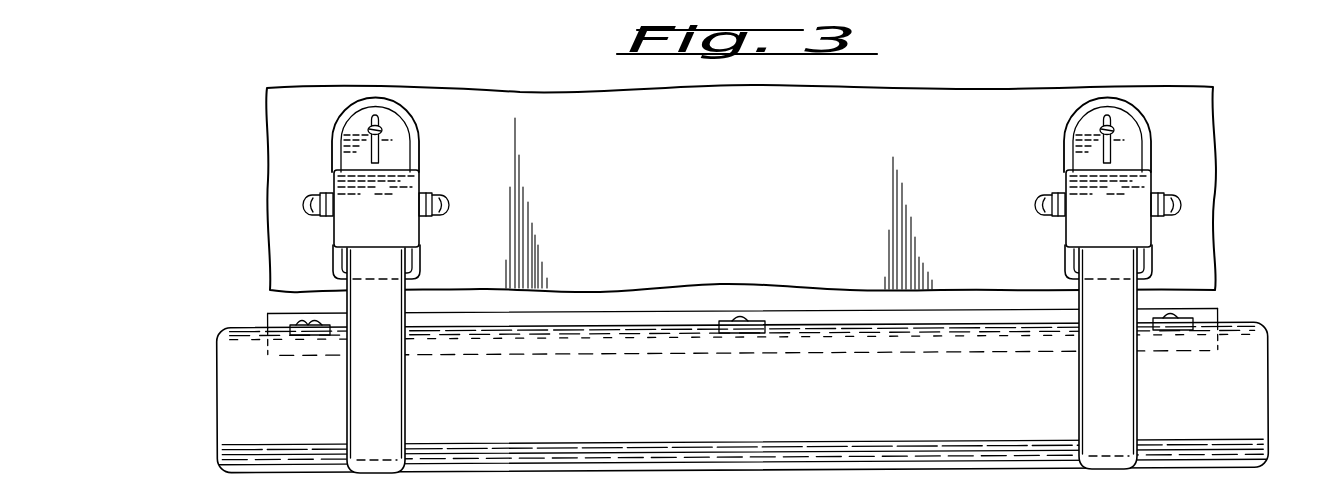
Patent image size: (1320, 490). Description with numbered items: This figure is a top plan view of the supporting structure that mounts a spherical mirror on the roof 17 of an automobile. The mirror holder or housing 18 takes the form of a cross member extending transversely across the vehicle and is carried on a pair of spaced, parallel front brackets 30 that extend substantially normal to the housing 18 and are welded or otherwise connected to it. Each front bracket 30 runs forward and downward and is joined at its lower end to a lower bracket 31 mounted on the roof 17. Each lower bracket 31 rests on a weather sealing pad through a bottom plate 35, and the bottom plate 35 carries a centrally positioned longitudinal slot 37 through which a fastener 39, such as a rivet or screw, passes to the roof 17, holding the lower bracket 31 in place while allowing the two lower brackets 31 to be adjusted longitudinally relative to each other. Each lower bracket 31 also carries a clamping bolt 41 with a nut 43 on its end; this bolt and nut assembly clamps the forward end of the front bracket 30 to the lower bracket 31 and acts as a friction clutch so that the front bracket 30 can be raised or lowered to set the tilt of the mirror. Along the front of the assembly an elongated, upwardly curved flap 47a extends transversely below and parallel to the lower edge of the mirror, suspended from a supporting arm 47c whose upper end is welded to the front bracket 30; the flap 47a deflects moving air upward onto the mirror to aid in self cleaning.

The roof 17 is at (760, 227).
The mirror housing 18 is at (753, 415).
The front bracket 30 is at (400, 400).
The lower bracket 31 is at (419, 177).
The bottom plate 35 is at (1083, 120).
The longitudinal slot 37 is at (376, 152).
The fastener 39 is at (381, 131).
The clamping bolt 41 is at (313, 214).
The nut 43 is at (440, 217).
The flap 47a is at (277, 357).
The supporting arm 47c is at (295, 325).